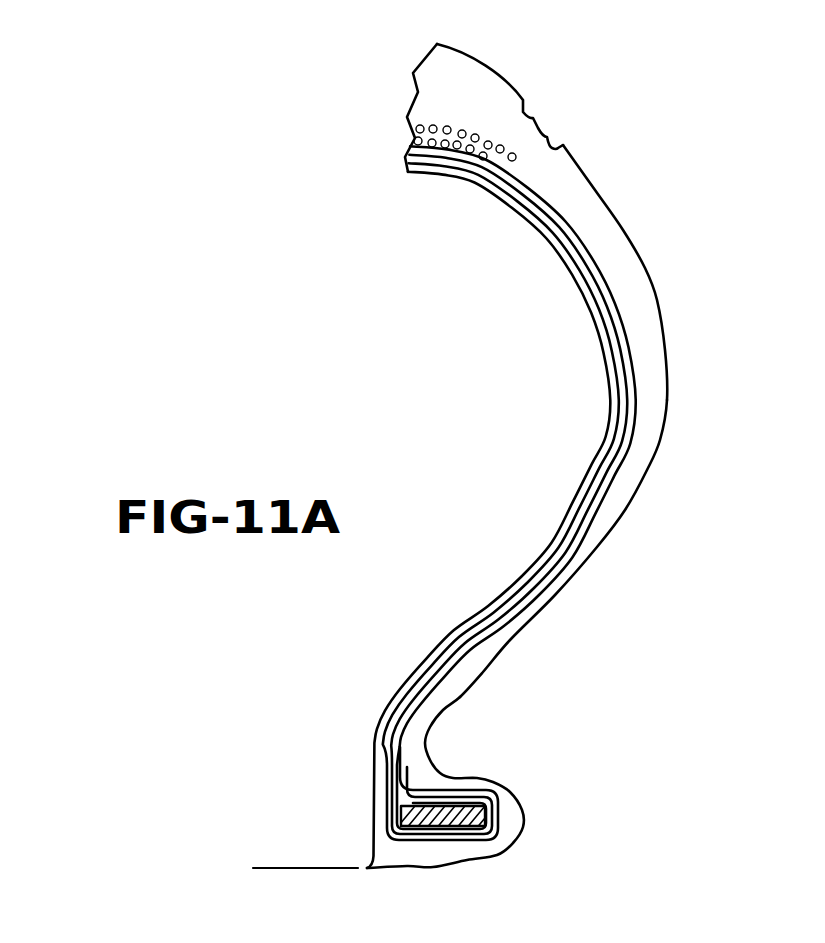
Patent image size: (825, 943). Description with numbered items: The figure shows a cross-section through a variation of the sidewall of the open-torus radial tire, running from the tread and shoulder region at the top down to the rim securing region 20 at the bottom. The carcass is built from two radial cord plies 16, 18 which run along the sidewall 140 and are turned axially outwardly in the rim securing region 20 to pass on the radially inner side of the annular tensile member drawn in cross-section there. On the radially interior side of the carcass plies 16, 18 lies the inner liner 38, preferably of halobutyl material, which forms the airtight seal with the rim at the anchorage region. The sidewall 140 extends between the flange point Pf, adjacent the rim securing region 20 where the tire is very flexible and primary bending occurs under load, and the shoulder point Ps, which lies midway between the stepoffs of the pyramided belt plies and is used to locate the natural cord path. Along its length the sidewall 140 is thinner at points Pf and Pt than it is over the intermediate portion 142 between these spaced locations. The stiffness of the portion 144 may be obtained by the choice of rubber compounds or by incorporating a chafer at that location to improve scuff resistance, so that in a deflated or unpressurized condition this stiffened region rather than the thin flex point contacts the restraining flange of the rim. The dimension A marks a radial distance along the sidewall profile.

The carcass ply 16 is at (473, 633).
The carcass ply 18 is at (563, 560).
The rim securing region 20 is at (495, 813).
The inner liner 38 is at (400, 698).
The sidewall 140 is at (678, 289).
The thicker sidewall portion 142 is at (704, 457).
The stiffened sidewall portion 144 is at (440, 783).
The shoulder point Ps is at (433, 300).
The sidewall point Pt is at (600, 197).
The flex point Pf is at (440, 699).
The distance A is at (272, 848).